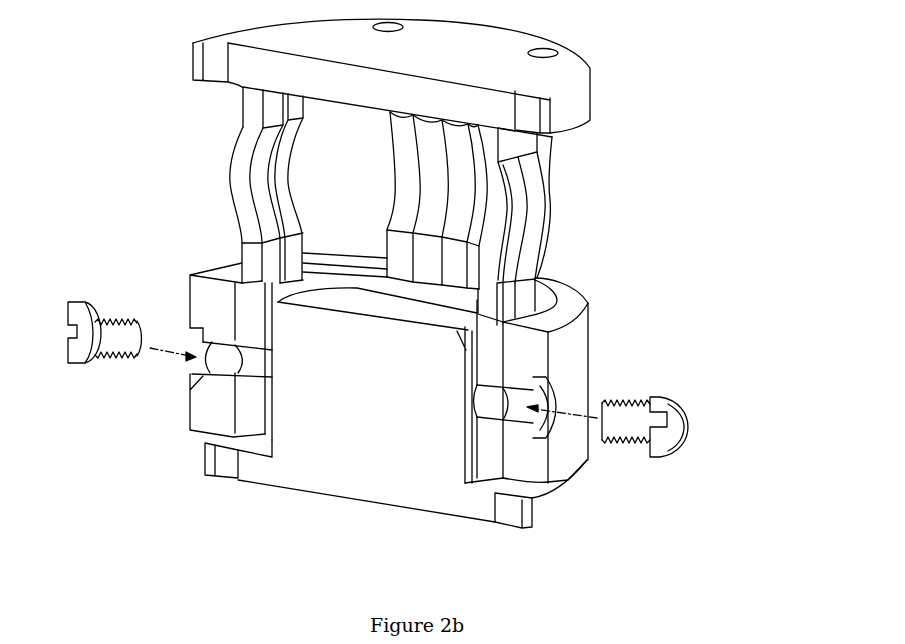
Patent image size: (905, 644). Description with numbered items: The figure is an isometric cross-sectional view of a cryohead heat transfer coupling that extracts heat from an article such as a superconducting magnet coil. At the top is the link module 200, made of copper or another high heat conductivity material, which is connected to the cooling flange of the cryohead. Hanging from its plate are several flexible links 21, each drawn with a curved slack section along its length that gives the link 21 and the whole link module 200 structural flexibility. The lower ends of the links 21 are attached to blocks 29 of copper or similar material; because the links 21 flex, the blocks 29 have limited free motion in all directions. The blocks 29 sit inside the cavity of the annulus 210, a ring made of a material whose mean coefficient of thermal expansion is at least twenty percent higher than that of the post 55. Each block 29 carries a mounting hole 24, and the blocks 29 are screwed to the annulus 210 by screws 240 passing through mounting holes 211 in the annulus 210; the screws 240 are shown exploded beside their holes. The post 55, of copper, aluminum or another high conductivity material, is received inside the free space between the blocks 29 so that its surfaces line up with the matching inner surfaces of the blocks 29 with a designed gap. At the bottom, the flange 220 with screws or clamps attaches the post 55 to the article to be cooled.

The link module 200 is at (563, 75).
The flexible link 21 is at (552, 205).
The annulus 210 is at (573, 307).
The mounting hole 211 is at (557, 397).
The flange 220 is at (550, 510).
The block 29 is at (290, 287).
The post 55 is at (385, 409).
The mounting hole 24 is at (257, 362).
The screw 240 is at (78, 302).